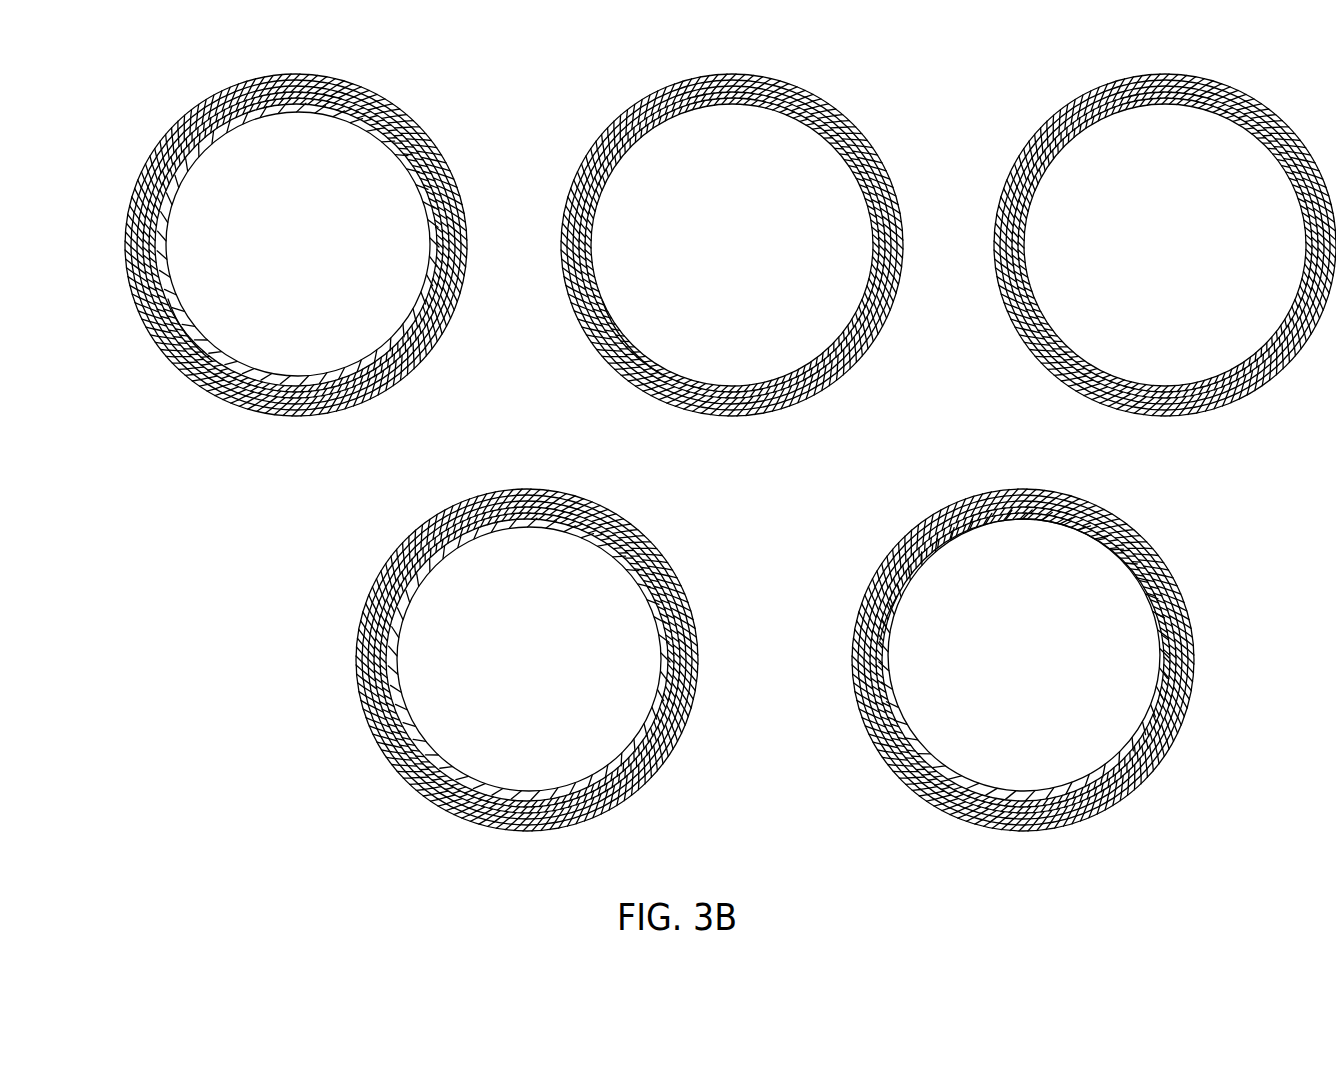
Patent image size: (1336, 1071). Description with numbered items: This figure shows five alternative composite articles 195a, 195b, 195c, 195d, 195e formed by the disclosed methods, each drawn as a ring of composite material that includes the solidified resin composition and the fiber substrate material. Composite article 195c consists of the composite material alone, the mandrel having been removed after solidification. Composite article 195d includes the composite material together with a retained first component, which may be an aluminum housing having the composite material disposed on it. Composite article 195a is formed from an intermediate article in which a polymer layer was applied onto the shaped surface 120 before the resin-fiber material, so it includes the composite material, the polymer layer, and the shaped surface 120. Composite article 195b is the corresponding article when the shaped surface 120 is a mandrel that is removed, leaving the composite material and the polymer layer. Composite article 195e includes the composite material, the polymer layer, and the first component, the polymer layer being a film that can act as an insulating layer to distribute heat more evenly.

The composite article 195a is at (287, 245).
The composite article 195b is at (731, 245).
The composite article 195c is at (1142, 245).
The composite article 195d is at (517, 660).
The composite article 195e is at (1010, 660).
The shaped surface 120 is at (185, 340).